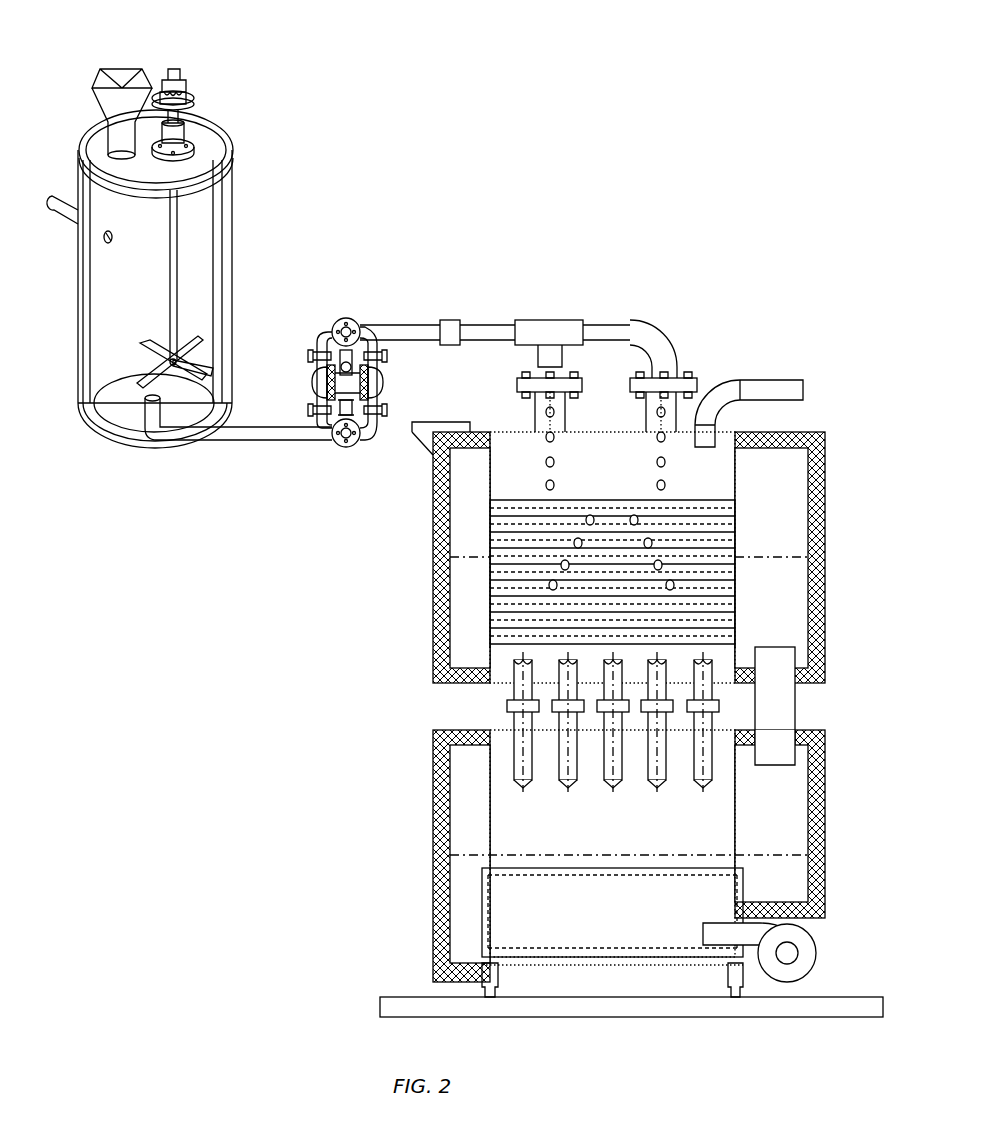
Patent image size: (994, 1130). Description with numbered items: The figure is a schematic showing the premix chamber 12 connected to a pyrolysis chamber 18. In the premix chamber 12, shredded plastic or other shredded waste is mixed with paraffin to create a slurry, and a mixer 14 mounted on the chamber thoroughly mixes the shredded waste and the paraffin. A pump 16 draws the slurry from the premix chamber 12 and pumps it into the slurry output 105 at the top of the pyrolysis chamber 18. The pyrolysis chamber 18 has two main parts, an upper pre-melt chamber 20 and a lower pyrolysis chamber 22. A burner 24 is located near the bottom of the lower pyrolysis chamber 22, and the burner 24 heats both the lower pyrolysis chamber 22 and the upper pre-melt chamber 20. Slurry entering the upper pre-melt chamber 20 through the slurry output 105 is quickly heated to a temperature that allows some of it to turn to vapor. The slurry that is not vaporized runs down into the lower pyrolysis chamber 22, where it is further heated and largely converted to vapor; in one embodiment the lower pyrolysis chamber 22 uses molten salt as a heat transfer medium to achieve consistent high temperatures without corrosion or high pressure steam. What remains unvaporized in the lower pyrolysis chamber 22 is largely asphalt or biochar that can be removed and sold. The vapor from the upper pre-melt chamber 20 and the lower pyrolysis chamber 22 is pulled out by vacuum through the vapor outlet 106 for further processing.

The premix chamber 12 is at (232, 240).
The mixer 14 is at (175, 66).
The pump 16 is at (320, 378).
The pyrolysis chamber 18 is at (270, 710).
The upper pre-melt chamber 20 is at (413, 560).
The lower pyrolysis chamber 22 is at (410, 846).
The burner 24 is at (787, 982).
The slurry output 105 is at (403, 330).
The vapor outlet 106 is at (770, 385).